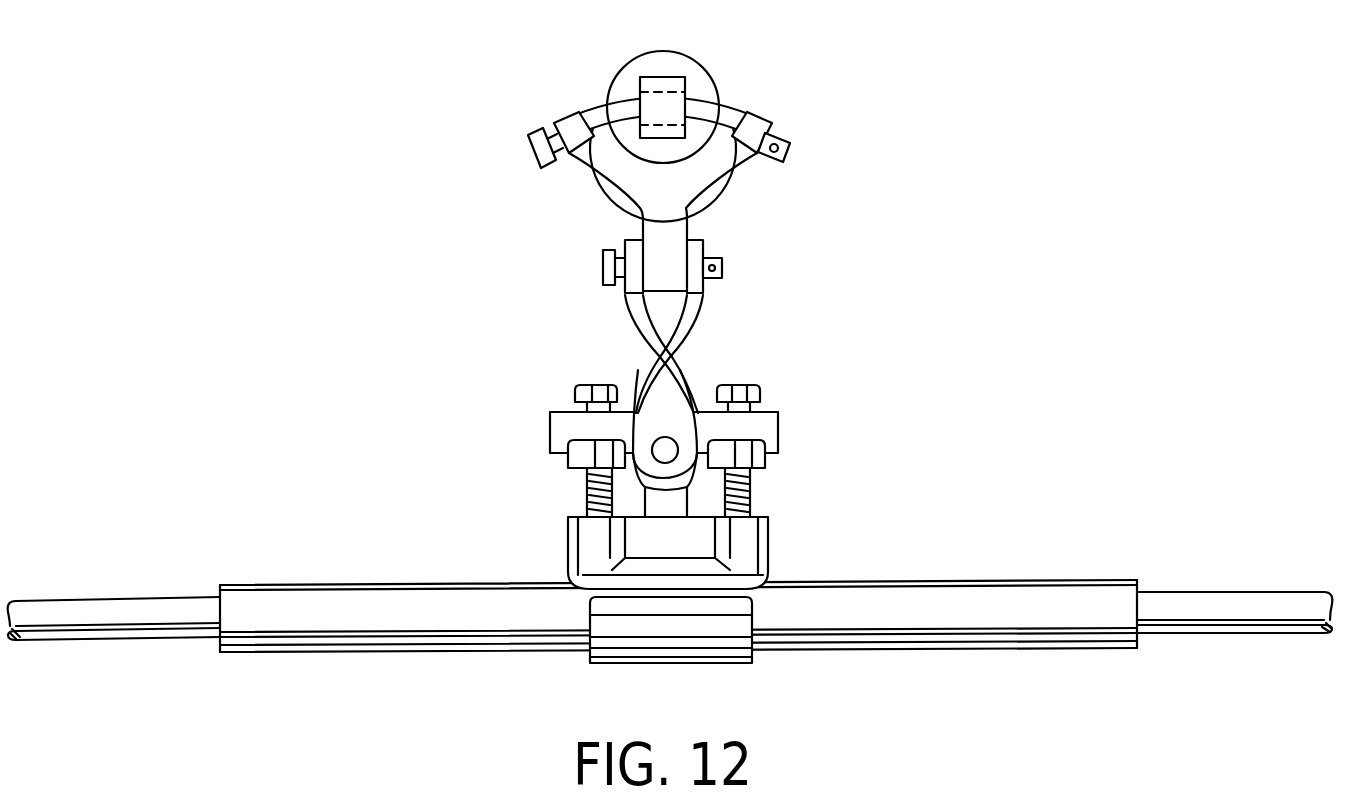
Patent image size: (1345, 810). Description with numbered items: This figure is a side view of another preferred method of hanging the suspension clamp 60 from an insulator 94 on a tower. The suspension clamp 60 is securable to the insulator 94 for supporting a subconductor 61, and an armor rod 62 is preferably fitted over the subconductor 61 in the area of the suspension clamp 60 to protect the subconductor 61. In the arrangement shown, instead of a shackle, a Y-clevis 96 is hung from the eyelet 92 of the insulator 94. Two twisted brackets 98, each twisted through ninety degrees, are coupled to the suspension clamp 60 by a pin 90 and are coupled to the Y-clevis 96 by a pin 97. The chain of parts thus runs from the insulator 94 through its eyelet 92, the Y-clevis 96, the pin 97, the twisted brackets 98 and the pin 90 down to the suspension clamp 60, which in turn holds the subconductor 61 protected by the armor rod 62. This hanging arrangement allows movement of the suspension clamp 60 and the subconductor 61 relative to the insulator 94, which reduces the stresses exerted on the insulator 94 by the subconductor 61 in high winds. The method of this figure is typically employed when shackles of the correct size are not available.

The suspension clamp 60 is at (768, 427).
The subconductor 61 is at (100, 630).
The armor rod 62 is at (318, 641).
The pin 90 is at (670, 455).
The eyelet 92 is at (677, 82).
The insulator 94 is at (658, 68).
The Y-clevis 96 is at (594, 167).
The pin 97 is at (603, 268).
The twisted brackets 98 is at (635, 328).